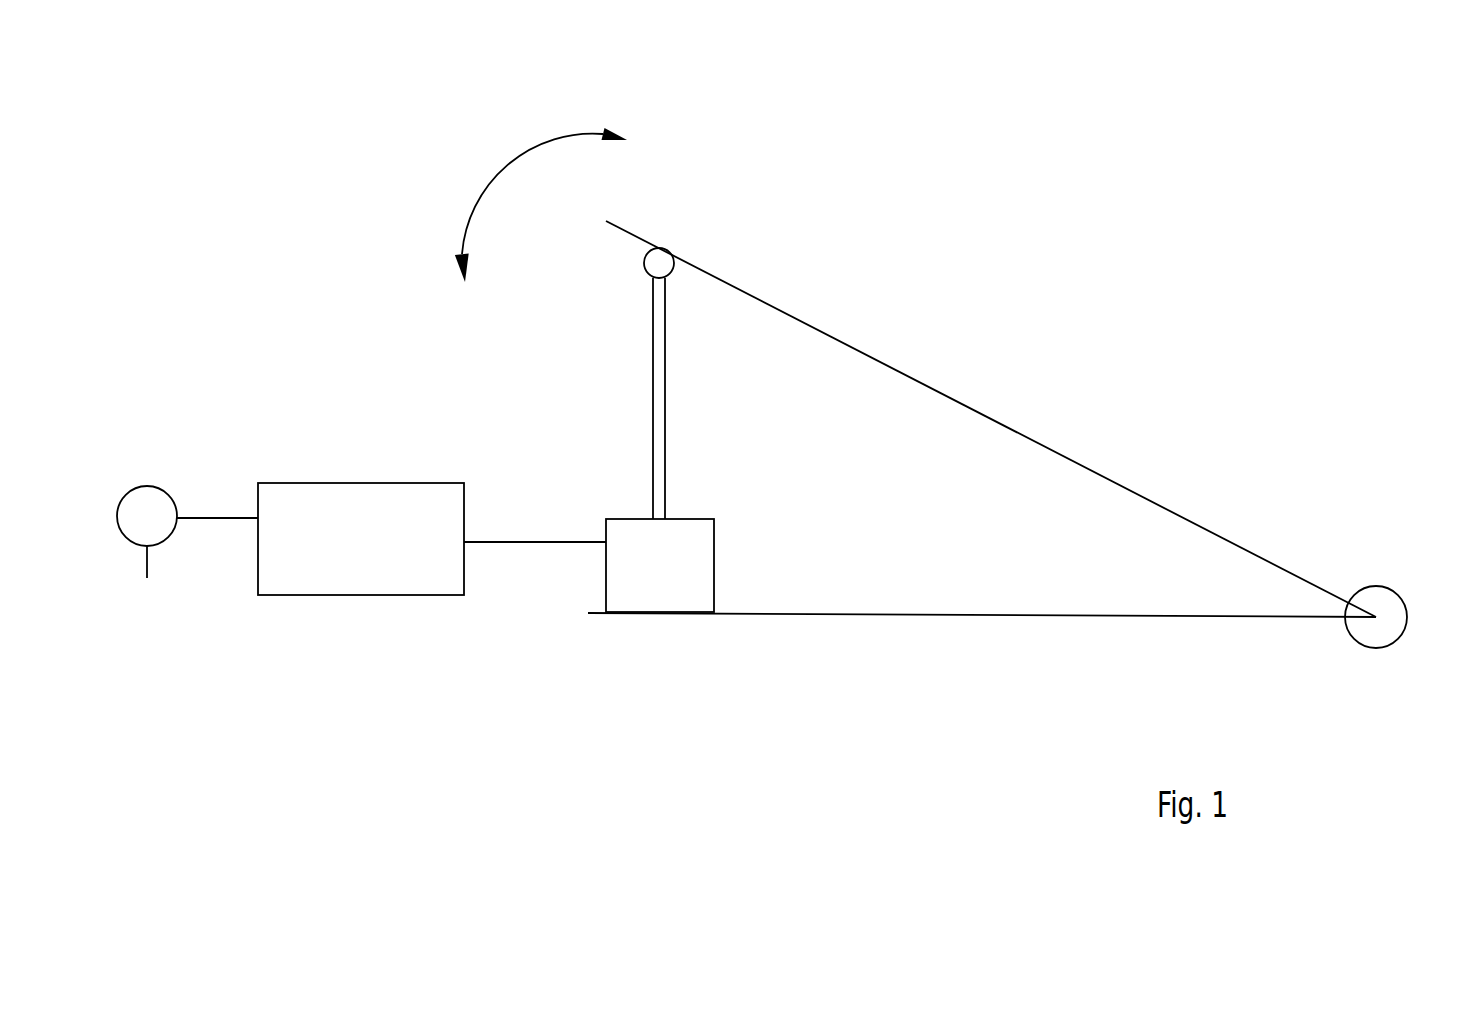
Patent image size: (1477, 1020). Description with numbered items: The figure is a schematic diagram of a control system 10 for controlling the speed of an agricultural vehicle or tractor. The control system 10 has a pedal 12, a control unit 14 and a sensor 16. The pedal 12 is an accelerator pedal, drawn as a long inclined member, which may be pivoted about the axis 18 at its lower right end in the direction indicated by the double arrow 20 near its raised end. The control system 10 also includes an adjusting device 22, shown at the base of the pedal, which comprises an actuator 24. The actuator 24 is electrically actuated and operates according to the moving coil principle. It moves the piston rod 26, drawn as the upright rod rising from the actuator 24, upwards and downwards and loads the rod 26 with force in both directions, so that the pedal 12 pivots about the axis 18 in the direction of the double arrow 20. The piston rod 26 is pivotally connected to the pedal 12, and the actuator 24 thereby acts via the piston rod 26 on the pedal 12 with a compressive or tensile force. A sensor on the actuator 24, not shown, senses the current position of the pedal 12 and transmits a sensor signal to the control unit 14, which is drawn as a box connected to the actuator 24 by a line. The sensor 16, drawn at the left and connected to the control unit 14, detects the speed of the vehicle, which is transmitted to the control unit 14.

The control system 10 is at (1200, 236).
The pedal 12 is at (893, 367).
The control unit 14 is at (432, 539).
The sensor 16 is at (157, 508).
The axis 18 is at (1376, 617).
The double arrow 20 is at (493, 185).
The adjusting device 22 is at (654, 430).
The actuator 24 is at (663, 583).
The piston rod 26 is at (665, 460).